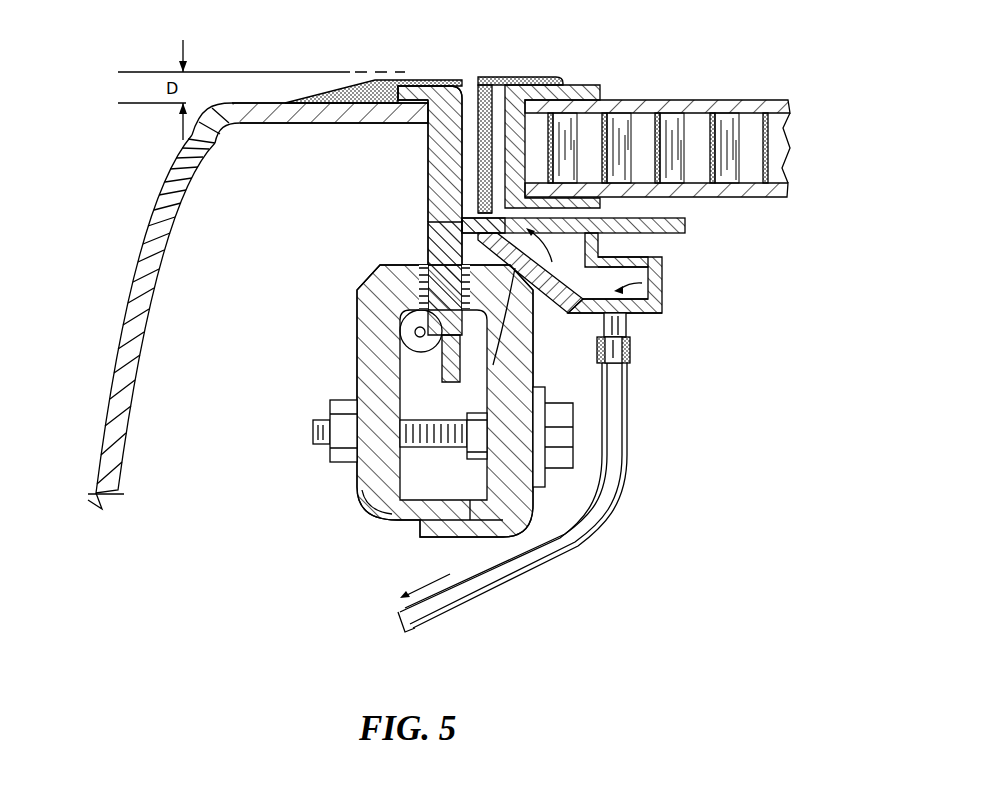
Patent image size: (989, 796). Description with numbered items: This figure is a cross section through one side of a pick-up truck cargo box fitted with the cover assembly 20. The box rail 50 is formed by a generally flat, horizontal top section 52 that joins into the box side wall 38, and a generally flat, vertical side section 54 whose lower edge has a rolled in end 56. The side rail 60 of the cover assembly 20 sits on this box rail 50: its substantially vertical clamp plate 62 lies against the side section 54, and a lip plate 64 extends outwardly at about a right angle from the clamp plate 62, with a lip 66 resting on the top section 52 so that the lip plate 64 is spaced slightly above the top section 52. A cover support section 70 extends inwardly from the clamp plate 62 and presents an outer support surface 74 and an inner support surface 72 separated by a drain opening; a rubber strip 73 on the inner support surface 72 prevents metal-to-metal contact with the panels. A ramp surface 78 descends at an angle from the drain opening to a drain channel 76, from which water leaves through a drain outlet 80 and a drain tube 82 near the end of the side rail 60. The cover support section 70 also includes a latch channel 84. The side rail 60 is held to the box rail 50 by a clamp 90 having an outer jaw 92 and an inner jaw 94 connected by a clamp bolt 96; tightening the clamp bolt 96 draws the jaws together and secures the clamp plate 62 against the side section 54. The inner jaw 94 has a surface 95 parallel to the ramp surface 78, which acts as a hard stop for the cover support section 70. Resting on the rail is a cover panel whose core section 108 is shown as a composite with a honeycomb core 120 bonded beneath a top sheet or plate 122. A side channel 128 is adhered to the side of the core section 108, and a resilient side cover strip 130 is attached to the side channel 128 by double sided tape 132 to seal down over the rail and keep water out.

The cover assembly 20 is at (335, 557).
The box side wall 38 is at (130, 332).
The box rail 50 is at (388, 150).
The top section 52 is at (315, 121).
The side section 54 is at (428, 195).
The rolled in end 56 is at (410, 327).
The side rail 60 is at (667, 270).
The clamp plate 62 is at (470, 233).
The lip plate 64 is at (420, 86).
The lip 66 is at (367, 81).
The cover support section 70 is at (513, 268).
The inner support surface 72 is at (683, 225).
The rubber strip 73 is at (492, 212).
The outer support surface 74 is at (419, 288).
The drain channel 76 is at (645, 314).
The ramp surface 78 is at (674, 262).
The drain outlet 80 is at (630, 360).
The drain tube 82 is at (582, 547).
The latch channel 84 is at (614, 243).
The clamp 90 is at (342, 478).
The outer jaw 92 is at (372, 390).
The inner jaw 94 is at (430, 533).
The surface 95 is at (487, 367).
The clamp bolt 96 is at (382, 510).
The core section 108 is at (747, 156).
The honeycomb core 120 is at (748, 146).
The top sheet or plate 122 is at (703, 100).
The side channel 128 is at (578, 86).
The side cover strip 130 is at (493, 66).
The double sided tape 132 is at (535, 77).